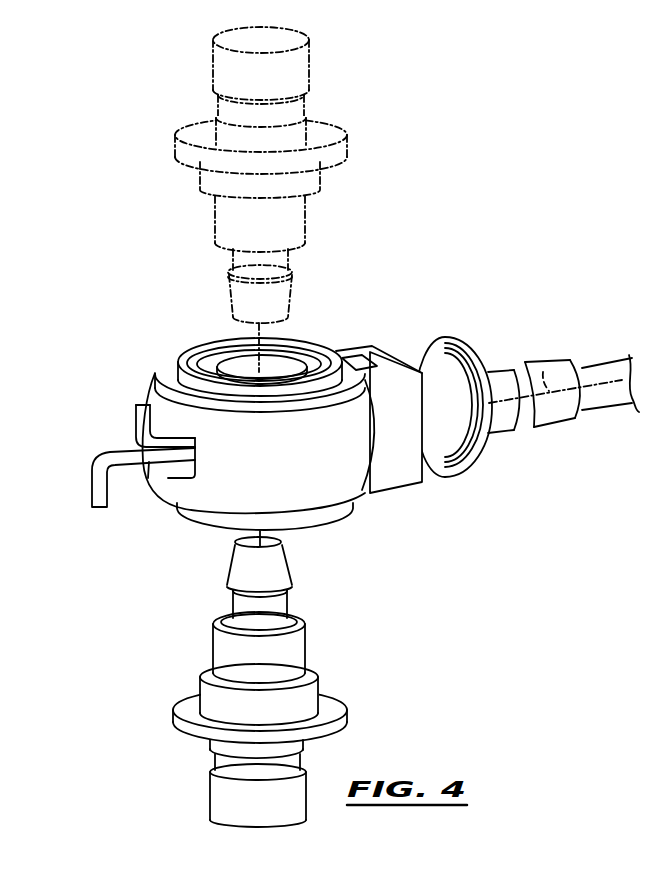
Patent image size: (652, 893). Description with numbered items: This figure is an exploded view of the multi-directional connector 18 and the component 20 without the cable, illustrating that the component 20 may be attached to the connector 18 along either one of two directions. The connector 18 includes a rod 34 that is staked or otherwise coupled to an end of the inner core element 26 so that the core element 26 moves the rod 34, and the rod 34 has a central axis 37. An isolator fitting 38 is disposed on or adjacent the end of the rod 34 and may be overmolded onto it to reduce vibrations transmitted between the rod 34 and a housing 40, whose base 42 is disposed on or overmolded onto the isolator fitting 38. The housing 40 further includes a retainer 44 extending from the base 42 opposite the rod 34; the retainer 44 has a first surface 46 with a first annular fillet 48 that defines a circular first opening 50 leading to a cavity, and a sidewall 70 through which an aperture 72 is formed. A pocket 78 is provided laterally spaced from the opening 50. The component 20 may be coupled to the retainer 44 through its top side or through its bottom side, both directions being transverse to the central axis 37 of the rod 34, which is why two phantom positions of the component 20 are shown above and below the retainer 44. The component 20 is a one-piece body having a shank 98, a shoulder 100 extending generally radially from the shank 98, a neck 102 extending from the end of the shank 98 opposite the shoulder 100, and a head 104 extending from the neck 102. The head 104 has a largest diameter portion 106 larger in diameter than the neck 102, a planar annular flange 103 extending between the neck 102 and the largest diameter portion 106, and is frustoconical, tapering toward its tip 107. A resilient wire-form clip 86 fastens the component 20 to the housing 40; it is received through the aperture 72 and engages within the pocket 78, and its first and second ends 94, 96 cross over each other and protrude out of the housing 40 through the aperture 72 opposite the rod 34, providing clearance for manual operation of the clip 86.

The multi-directional connector 18 is at (148, 273).
The component 20 is at (131, 128).
The inner core element 26 is at (600, 366).
The rod 34 is at (560, 362).
The central axis 37 is at (543, 372).
The isolator fitting 38 is at (477, 363).
The housing 40 is at (447, 330).
The base 42 is at (425, 340).
The retainer 44 is at (160, 375).
The first surface 46 is at (187, 350).
The first annular fillet 48 is at (215, 340).
The first opening 50 is at (272, 358).
The sidewall 70 is at (147, 397).
The aperture 72 is at (148, 465).
The pocket 78 is at (363, 370).
The resilient clip 86 is at (121, 463).
The first end 94 is at (133, 413).
The second end 96 is at (92, 488).
The shank 98 is at (208, 620).
The shoulder 100 is at (315, 675).
The neck 102 is at (208, 578).
The flange 103 is at (258, 593).
The head 104 is at (208, 535).
The largest diameter portion 106 is at (290, 588).
The tip 107 is at (281, 542).